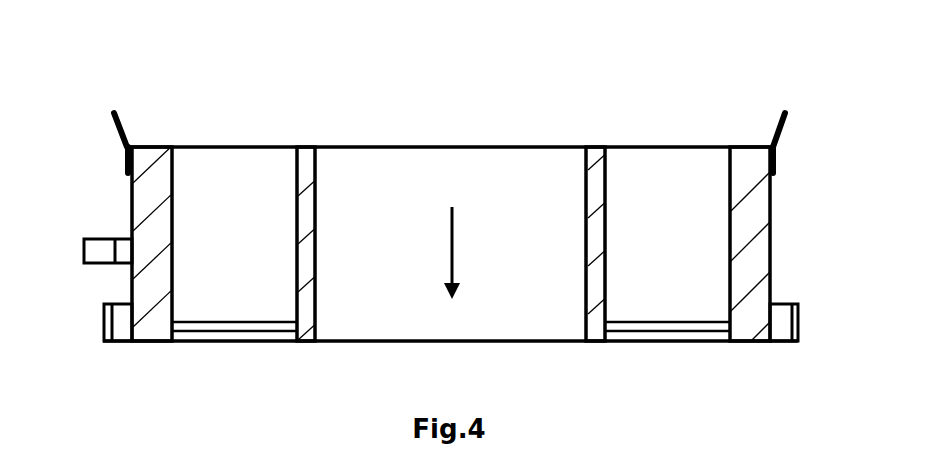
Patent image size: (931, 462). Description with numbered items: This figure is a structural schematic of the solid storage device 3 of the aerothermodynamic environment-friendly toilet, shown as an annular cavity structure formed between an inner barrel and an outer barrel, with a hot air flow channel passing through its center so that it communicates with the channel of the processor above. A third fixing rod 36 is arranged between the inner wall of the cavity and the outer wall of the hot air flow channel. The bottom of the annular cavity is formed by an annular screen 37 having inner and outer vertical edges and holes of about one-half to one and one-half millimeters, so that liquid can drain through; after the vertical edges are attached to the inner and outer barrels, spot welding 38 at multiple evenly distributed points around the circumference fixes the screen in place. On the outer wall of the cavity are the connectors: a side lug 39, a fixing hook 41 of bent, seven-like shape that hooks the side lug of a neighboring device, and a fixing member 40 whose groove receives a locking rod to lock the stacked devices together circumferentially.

The solid storage device 3 is at (793, 182).
The third fixing rod 36 is at (680, 335).
The annular screen 37 is at (660, 331).
The spot welding 38 is at (243, 181).
The side lug 39 is at (121, 303).
The fixing member 40 is at (96, 240).
The fixing hook 41 is at (125, 142).